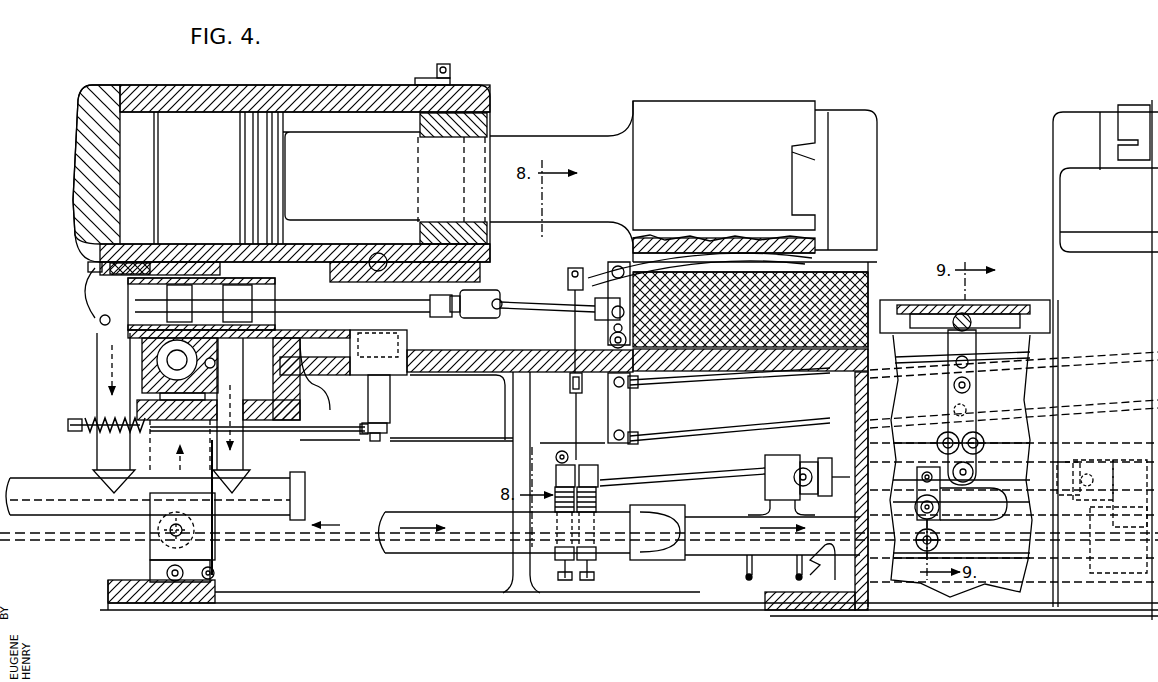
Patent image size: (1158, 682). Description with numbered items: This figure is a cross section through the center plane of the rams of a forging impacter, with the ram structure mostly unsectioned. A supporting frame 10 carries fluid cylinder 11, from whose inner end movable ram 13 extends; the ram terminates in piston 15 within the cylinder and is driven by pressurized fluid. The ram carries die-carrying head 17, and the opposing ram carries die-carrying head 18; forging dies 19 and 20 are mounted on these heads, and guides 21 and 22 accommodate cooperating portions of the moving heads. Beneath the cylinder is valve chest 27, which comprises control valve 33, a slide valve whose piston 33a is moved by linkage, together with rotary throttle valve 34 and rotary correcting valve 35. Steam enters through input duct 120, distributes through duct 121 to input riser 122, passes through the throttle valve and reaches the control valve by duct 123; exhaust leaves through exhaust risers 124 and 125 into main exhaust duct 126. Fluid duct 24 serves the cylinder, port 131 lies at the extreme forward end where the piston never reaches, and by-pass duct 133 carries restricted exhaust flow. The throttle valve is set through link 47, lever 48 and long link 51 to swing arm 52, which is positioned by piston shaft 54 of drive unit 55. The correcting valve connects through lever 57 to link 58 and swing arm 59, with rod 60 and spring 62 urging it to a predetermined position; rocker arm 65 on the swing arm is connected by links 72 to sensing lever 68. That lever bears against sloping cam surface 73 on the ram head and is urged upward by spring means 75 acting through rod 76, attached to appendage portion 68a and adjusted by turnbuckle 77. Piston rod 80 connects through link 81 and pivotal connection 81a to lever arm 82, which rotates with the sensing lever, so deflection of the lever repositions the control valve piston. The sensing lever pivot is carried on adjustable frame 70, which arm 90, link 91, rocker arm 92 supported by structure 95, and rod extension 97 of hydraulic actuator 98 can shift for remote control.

The supporting frame 10 is at (280, 598).
The fluid cylinder 11 is at (322, 82).
The movable ram 13 is at (538, 137).
The piston 15 is at (245, 160).
The die-carrying head 17 is at (727, 107).
The die-carrying head 18 is at (1128, 106).
The forging die 19 is at (877, 135).
The forging die 20 is at (1062, 139).
The guide 21 is at (863, 268).
The guide 22 is at (1062, 238).
The fluid duct 24 is at (373, 256).
The valve chest 27 is at (315, 342).
The control valve 33 is at (290, 304).
The piston 33a is at (178, 260).
The throttle valve 34 is at (157, 365).
The correcting valve 35 is at (398, 360).
The link 47 is at (214, 505).
The lever 48 is at (214, 574).
The long link 51 is at (738, 545).
The swing arm 52 is at (942, 514).
The piston shaft 54 is at (900, 478).
The drive unit 55 is at (690, 482).
The lever 57 is at (376, 447).
The link 58 is at (443, 440).
The swing arm 59 is at (975, 317).
The rod 60 is at (330, 446).
The spring 62 is at (88, 420).
The rocker arm 65 is at (985, 367).
The sensing lever 68 is at (770, 258).
The appendage portion 68a is at (590, 275).
The adjustable frame 70 is at (700, 269).
The link 72 is at (782, 376).
The sloping cam surface 73 is at (645, 252).
The spring means 75 is at (596, 497).
The rod 76 is at (574, 428).
The turnbuckle 77 is at (568, 382).
The piston rod 80 is at (440, 312).
The link 81 is at (545, 315).
The pivotal connection 81a is at (499, 300).
The lever arm 82 is at (614, 272).
The arm 90 is at (630, 408).
The link 91 is at (737, 428).
The rocker arm 92 is at (976, 460).
The structure 95 is at (988, 402).
The rod extension 97 is at (1018, 480).
The hydraulic actuator 98 is at (1090, 498).
The input duct 120 is at (428, 514).
The duct 121 is at (340, 522).
The input riser 122 is at (192, 471).
The duct 123 is at (178, 335).
The exhaust riser 124 is at (100, 451).
The exhaust riser 125 is at (242, 466).
The main exhaust duct 126 is at (66, 507).
The port 131 is at (411, 232).
The by-pass duct 133 is at (82, 270).